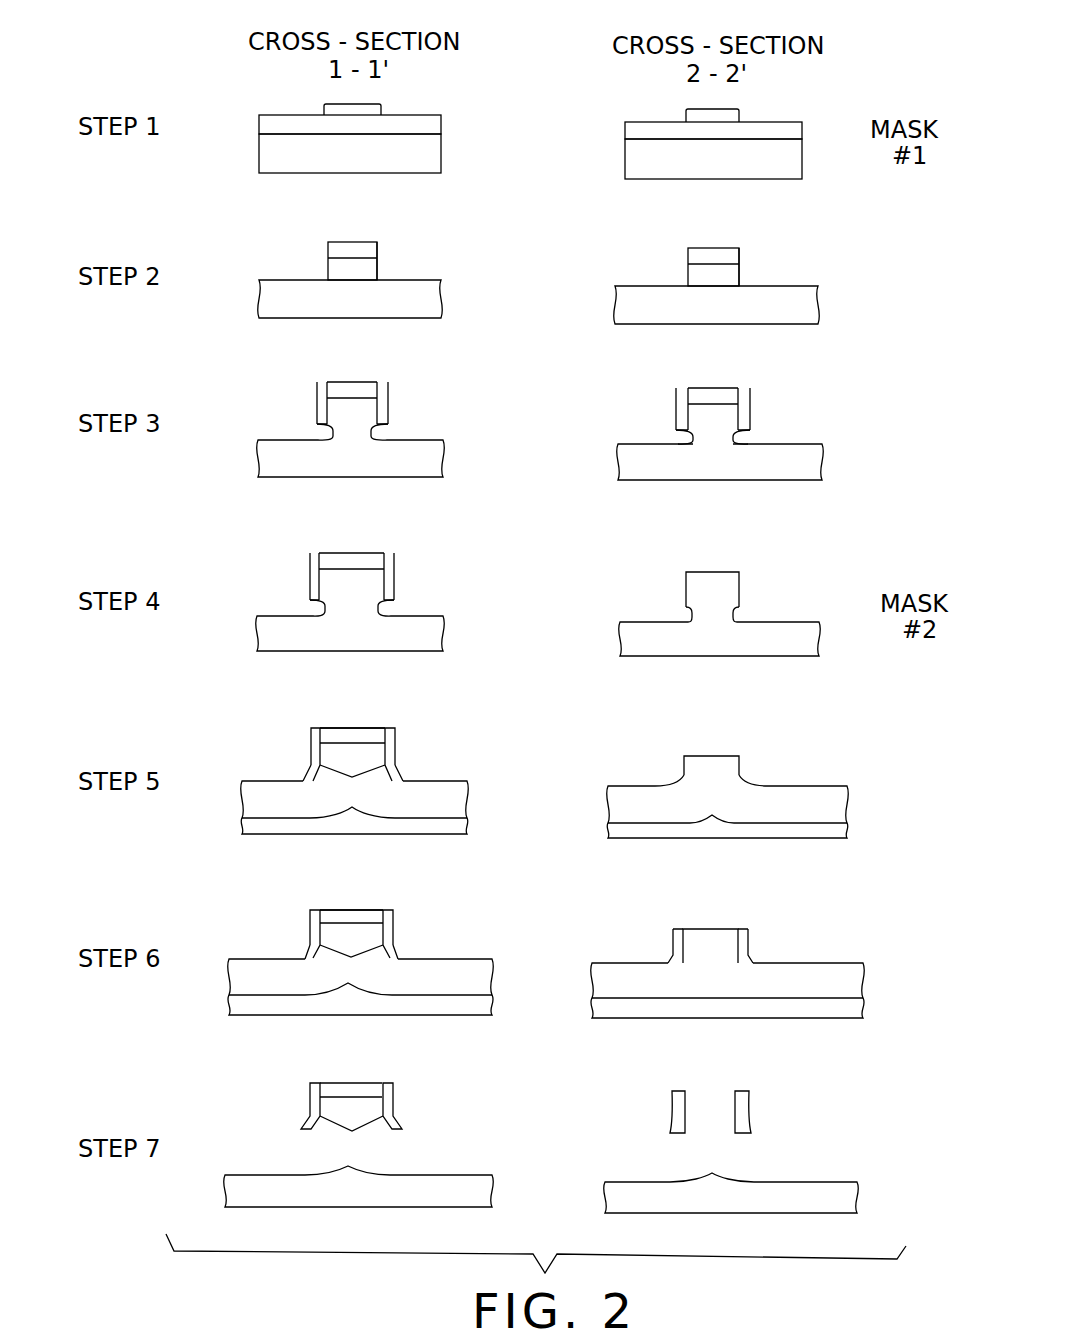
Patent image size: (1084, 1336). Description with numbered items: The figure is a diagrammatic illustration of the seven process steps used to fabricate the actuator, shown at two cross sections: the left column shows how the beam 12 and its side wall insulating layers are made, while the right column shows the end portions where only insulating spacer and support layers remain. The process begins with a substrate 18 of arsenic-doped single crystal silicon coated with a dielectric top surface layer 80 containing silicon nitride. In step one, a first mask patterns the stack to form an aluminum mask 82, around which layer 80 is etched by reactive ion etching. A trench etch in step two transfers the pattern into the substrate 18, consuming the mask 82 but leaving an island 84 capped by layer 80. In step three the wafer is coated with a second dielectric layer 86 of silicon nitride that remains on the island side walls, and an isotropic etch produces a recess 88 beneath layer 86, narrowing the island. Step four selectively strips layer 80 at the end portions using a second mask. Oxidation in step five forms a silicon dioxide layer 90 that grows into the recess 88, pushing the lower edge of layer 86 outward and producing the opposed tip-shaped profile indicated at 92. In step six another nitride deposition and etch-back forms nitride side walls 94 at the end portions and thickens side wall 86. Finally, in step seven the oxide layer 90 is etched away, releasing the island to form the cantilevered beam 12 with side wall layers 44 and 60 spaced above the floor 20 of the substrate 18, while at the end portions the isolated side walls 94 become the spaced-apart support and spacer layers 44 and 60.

The substrate 18 is at (432, 158).
The dielectric top surface layer 80 is at (437, 124).
The mask 82 is at (368, 110).
The island 84 is at (385, 262).
The second dielectric layer 86 is at (390, 410).
The recess 88 is at (389, 433).
The silicon dioxide layer 90 is at (432, 790).
The opposed tip-shaped profile 92 is at (330, 803).
The nitride side walls 94 is at (672, 940).
The beam 12 is at (348, 1100).
The insulating layer 60 is at (310, 1097).
The insulating layer 44 is at (393, 1100).
The floor 20 is at (420, 1175).